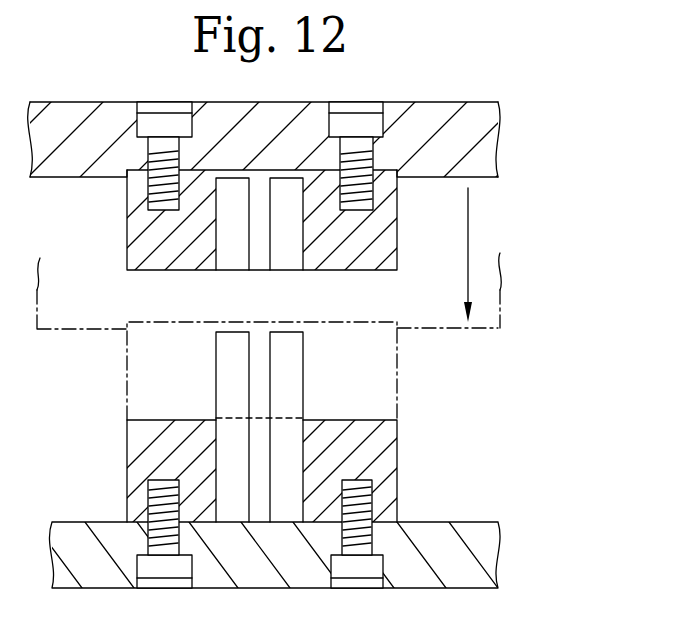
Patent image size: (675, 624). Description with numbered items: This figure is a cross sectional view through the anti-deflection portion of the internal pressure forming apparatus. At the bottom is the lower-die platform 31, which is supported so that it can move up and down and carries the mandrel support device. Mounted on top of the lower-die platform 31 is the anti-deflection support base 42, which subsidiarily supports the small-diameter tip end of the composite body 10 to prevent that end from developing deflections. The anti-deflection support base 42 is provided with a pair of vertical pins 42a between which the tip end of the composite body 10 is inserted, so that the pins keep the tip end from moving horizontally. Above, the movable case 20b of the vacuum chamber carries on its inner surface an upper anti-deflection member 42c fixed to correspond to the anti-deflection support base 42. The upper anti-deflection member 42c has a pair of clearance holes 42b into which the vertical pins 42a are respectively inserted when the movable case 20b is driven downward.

The movable case 20b is at (498, 172).
The upper anti-deflection member 42c is at (147, 262).
The clearance holes 42b is at (291, 254).
The anti-deflection support base 42 is at (402, 447).
The vertical pins 42a is at (290, 383).
The composite body 10 is at (244, 409).
The lower-die platform 31 is at (457, 530).